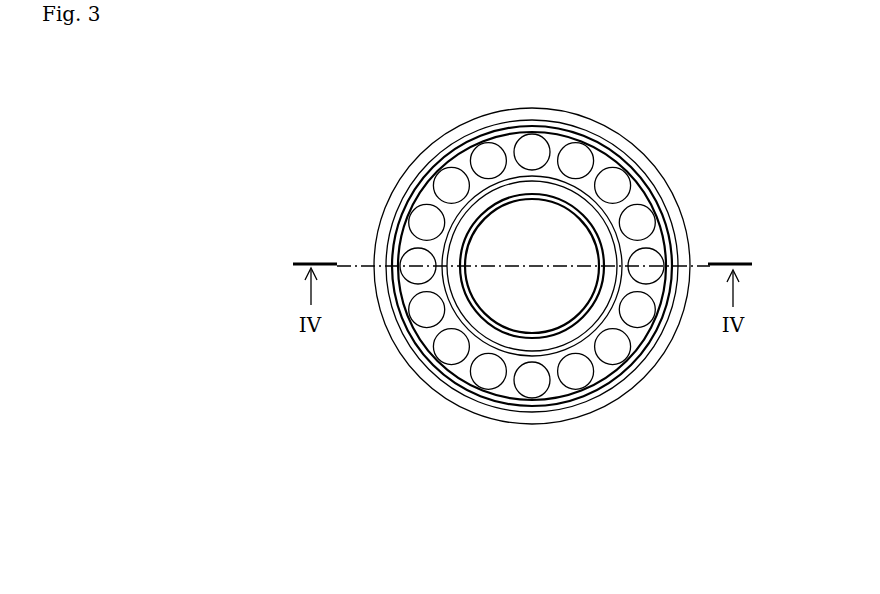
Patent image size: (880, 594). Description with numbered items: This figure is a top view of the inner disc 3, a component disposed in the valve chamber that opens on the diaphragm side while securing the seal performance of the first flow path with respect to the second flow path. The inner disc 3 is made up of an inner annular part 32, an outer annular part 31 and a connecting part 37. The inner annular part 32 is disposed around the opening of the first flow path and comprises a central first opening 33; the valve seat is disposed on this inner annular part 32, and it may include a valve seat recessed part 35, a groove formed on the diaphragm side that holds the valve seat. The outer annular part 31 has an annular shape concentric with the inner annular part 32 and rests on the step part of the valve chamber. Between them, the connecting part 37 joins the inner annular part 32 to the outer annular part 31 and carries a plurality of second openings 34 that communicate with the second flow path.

The inner disc 3 is at (602, 80).
The outer annular part 31 is at (605, 133).
The inner annular part 32 is at (528, 326).
The first opening 33 is at (565, 258).
The second openings 34 is at (614, 348).
The valve seat recessed part 35 is at (512, 197).
The connecting part 37 is at (437, 343).